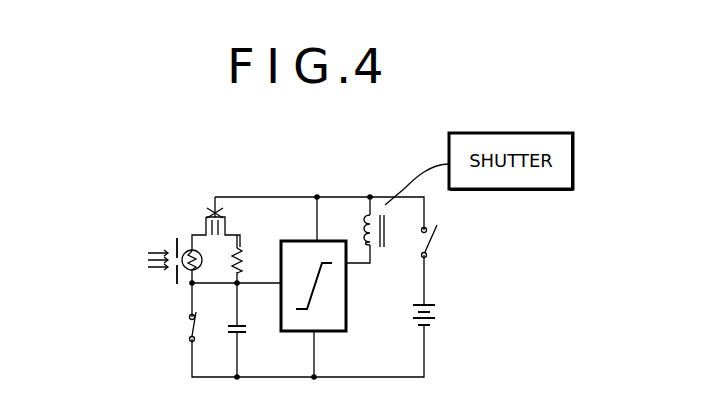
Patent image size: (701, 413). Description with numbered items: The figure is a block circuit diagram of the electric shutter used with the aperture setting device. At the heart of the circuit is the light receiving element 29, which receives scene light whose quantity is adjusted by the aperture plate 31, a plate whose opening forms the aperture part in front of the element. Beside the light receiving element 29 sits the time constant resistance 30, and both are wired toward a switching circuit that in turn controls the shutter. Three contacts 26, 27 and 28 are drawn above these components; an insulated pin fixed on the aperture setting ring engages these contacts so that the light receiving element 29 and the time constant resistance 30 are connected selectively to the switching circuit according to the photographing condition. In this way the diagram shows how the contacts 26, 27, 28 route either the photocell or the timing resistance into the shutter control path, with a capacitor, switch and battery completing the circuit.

The contact 26 is at (213, 211).
The contact 27 is at (222, 220).
The contact 28 is at (207, 228).
The light receiving element 29 is at (185, 251).
The time constant resistance 30 is at (250, 260).
The aperture plate 31 is at (174, 247).